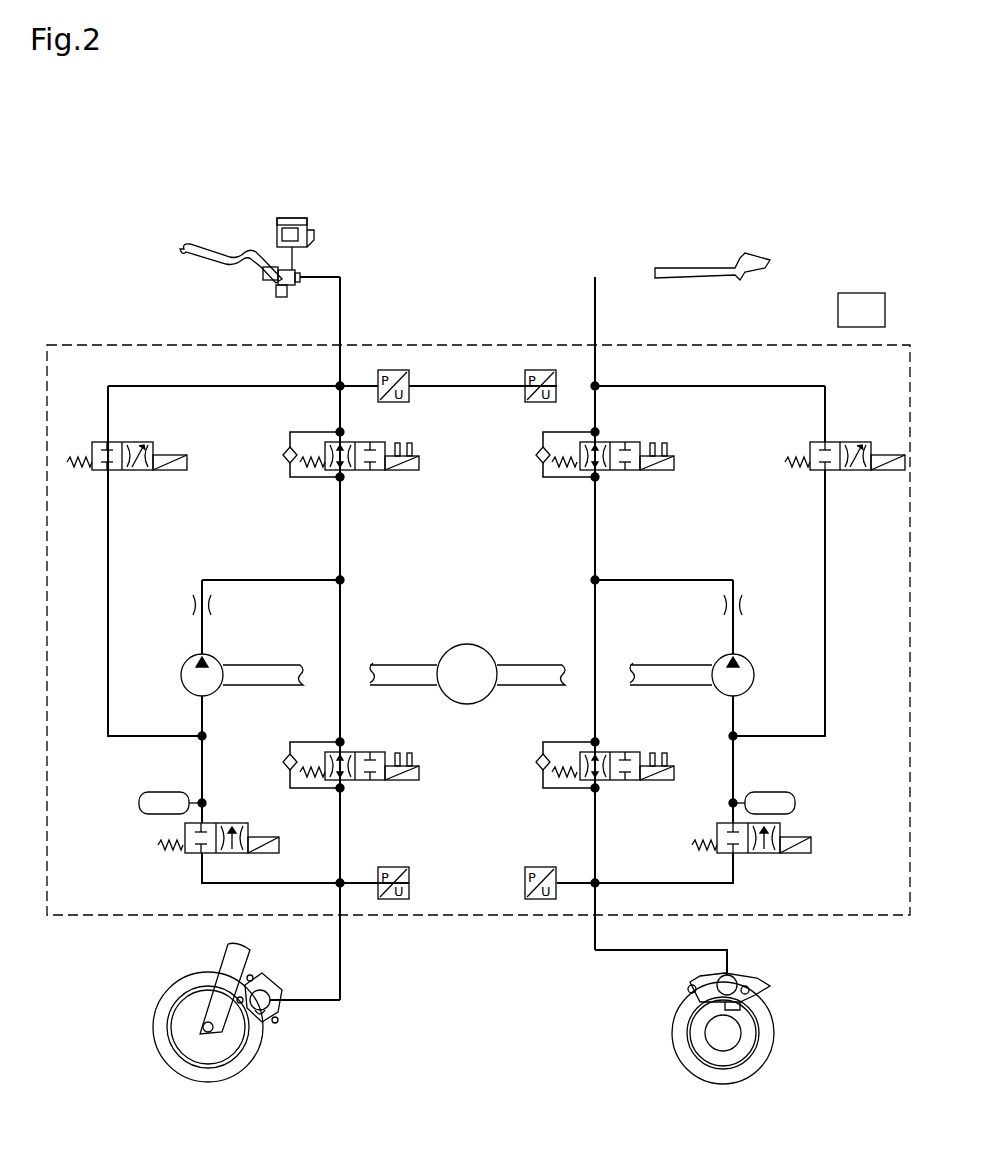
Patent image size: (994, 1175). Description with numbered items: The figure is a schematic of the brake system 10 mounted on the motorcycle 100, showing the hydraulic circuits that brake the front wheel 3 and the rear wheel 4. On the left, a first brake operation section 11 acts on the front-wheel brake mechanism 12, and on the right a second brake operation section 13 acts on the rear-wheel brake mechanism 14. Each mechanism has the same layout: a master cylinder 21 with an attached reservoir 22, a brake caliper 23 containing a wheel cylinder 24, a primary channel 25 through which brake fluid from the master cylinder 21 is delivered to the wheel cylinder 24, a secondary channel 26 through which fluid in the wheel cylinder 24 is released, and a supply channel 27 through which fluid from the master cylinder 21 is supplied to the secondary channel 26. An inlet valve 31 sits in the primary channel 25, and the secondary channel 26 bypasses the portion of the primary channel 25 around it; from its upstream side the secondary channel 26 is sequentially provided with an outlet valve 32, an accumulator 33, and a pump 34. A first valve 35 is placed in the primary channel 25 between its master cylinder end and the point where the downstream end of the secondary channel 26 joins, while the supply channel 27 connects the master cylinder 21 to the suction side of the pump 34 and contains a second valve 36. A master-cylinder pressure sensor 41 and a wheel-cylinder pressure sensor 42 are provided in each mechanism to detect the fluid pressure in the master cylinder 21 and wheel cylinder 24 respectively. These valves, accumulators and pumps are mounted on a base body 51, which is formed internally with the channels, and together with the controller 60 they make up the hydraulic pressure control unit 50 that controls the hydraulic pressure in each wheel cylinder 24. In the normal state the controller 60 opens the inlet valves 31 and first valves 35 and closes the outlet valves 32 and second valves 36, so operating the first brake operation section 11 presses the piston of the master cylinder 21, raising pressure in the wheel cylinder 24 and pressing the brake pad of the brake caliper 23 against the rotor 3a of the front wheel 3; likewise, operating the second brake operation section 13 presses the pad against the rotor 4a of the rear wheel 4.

The motorcycle 100 is at (852, 109).
The brake system 10 is at (145, 244).
The first brake operation section 11 is at (210, 255).
The front-wheel brake mechanism 12 is at (372, 168).
The second brake operation section 13 is at (745, 257).
The rear-wheel brake mechanism 14 is at (563, 168).
The master cylinder 21 is at (288, 288).
The reservoir 22 is at (287, 218).
The brake caliper 23 is at (263, 985).
The wheel cylinder 24 is at (280, 1010).
The primary channel 25 is at (340, 513).
The secondary channel 26 is at (265, 580).
The supply channel 27 is at (245, 387).
The inlet valve 31 is at (382, 781).
The outlet valve 32 is at (235, 822).
The accumulator 33 is at (161, 790).
The pump 34 is at (181, 672).
The first valve 35 is at (404, 471).
The second valve 36 is at (160, 471).
The master-cylinder pressure sensor 41 is at (409, 390).
The wheel-cylinder pressure sensor 42 is at (409, 886).
The hydraulic pressure control unit 50 is at (797, 262).
The base body 51 is at (78, 345).
The controller 60 is at (862, 286).
The front wheel 3 is at (234, 1054).
The rotor 3a is at (248, 1055).
The rear wheel 4 is at (695, 1073).
The rotor 4a is at (687, 1055).